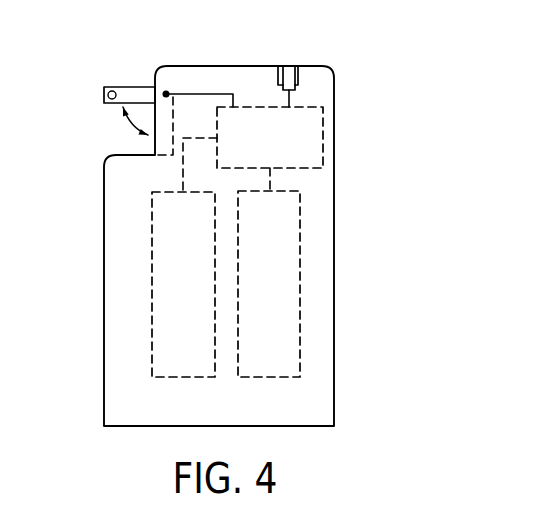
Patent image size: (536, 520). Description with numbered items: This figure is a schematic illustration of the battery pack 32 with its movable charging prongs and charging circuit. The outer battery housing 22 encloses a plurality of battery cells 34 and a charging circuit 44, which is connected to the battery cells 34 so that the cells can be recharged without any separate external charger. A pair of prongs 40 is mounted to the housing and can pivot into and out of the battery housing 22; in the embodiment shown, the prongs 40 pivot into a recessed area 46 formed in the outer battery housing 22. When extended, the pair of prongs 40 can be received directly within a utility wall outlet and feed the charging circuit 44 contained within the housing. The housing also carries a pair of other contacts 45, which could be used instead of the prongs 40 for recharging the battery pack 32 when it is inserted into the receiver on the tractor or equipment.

The battery housing 22 is at (334, 137).
The battery pack 32 is at (358, 236).
The battery cells 34 is at (152, 285).
The prongs 40 is at (131, 93).
The charging circuit 44 is at (270, 105).
The contacts 45 is at (300, 76).
The recessed area 46 is at (155, 149).